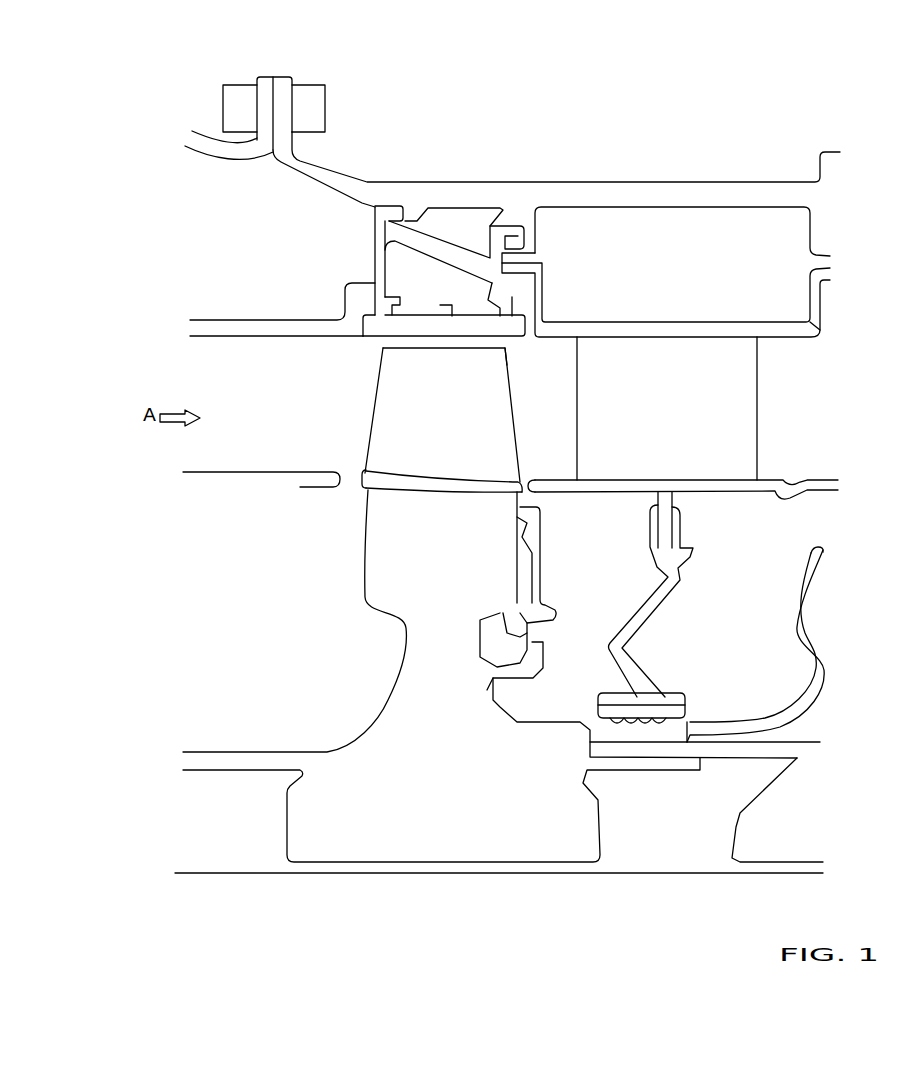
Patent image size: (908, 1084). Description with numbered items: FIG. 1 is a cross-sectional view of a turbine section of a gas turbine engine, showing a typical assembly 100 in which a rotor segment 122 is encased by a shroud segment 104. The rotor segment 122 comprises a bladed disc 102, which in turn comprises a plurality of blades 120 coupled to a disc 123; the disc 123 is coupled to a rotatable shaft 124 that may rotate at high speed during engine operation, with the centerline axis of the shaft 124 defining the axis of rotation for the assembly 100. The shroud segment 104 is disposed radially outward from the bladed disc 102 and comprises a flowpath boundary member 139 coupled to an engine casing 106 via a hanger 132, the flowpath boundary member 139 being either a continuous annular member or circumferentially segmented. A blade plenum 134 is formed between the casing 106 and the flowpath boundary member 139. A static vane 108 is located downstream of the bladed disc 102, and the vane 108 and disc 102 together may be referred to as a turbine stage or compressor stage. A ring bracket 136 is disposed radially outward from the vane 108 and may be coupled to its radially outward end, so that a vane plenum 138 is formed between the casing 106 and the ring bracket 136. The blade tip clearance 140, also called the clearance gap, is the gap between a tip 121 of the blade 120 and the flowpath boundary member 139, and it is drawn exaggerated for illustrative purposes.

The assembly 100 is at (100, 91).
The bladed disc 102 is at (457, 827).
The shroud segment 104 is at (150, 205).
The engine casing 106 is at (343, 178).
The static vane 108 is at (678, 421).
The blade 120 is at (453, 421).
The tip 121 is at (500, 346).
The rotor segment 122 is at (608, 902).
The disc 123 is at (373, 654).
The rotatable shaft 124 is at (228, 904).
The hanger 132 is at (383, 232).
The blade plenum 134 is at (400, 264).
The ring bracket 136 is at (803, 335).
The vane plenum 138 is at (745, 224).
The flowpath boundary member 139 is at (434, 319).
The blade tip clearance 140 is at (364, 349).